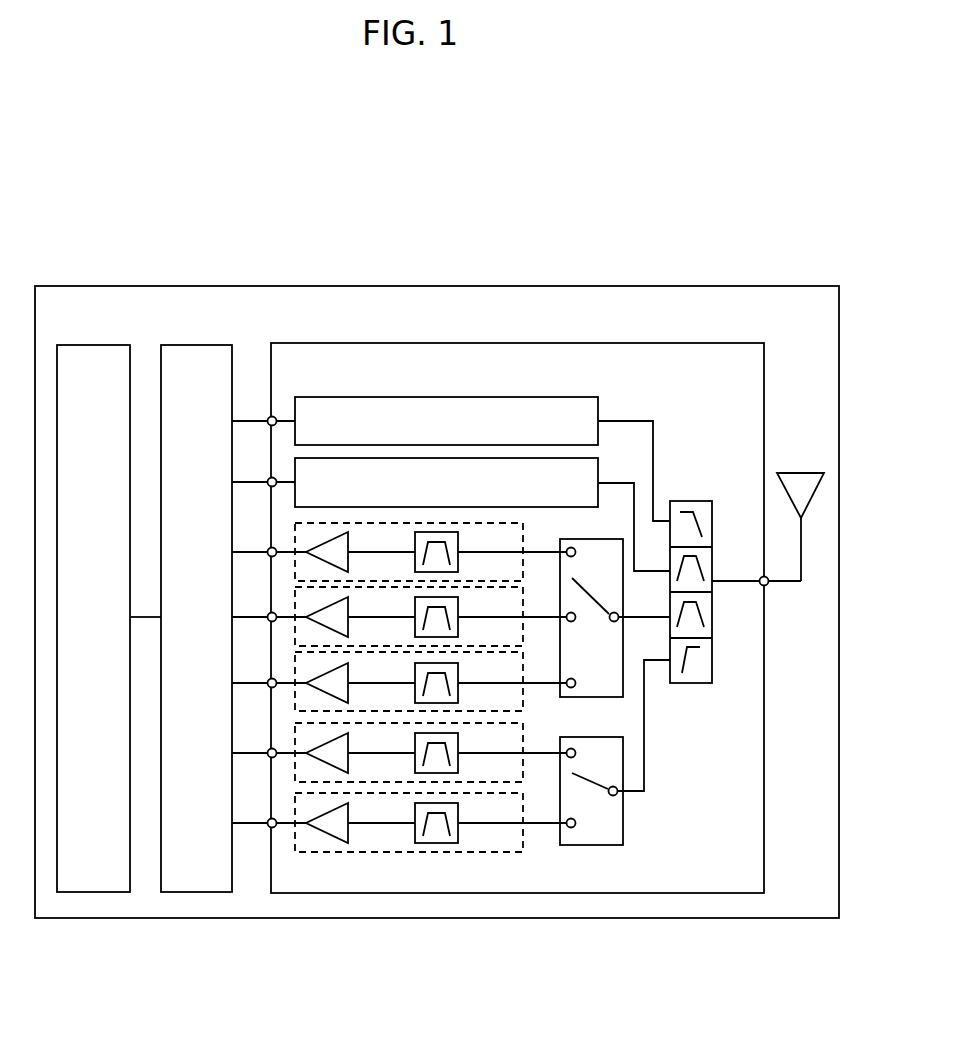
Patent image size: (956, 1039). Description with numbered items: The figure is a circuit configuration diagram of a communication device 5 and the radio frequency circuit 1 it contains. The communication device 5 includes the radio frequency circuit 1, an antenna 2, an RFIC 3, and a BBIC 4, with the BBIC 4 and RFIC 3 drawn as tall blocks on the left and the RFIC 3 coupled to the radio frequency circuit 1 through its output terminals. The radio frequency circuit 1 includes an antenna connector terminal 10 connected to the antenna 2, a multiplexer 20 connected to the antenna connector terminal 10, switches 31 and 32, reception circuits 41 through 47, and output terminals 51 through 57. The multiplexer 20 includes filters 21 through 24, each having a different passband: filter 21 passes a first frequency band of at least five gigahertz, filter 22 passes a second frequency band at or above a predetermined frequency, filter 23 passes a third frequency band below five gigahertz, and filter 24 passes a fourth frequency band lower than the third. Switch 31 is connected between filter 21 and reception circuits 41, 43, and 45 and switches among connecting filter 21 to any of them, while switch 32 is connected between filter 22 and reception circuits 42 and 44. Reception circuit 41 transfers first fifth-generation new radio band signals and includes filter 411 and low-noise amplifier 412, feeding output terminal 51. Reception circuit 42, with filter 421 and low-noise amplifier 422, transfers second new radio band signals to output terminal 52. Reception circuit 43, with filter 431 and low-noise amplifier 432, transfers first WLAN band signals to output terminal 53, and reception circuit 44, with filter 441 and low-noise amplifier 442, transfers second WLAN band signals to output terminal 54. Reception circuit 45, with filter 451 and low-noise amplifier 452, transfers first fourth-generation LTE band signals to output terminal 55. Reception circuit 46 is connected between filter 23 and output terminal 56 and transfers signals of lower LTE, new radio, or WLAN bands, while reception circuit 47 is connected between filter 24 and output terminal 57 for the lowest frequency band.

The radio frequency circuit 1 is at (339, 343).
The antenna 2 is at (797, 471).
The RFIC 3 is at (197, 345).
The BBIC 4 is at (84, 345).
The communication device 5 is at (782, 286).
The antenna connector terminal 10 is at (767, 586).
The multiplexer 20 is at (715, 571).
The filter 21 is at (713, 612).
The filter 22 is at (713, 655).
The filter 23 is at (713, 565).
The filter 24 is at (713, 520).
The switch 31 is at (592, 539).
The switch 32 is at (592, 845).
The reception circuit 41 is at (431, 544).
The reception circuit 42 is at (431, 744).
The reception circuit 43 is at (431, 609).
The reception circuit 44 is at (431, 813).
The reception circuit 45 is at (431, 674).
The reception circuit 46 is at (598, 468).
The reception circuit 47 is at (598, 403).
The filter 411 is at (460, 551).
The low-noise amplifier 412 is at (351, 551).
The filter 421 is at (460, 752).
The low-noise amplifier 422 is at (351, 752).
The filter 431 is at (460, 616).
The low-noise amplifier 432 is at (351, 616).
The filter 441 is at (460, 822).
The low-noise amplifier 442 is at (351, 822).
The filter 451 is at (460, 682).
The low-noise amplifier 452 is at (351, 682).
The output terminal 51 is at (268, 549).
The output terminal 52 is at (268, 750).
The output terminal 53 is at (268, 614).
The output terminal 54 is at (268, 820).
The output terminal 55 is at (268, 680).
The output terminal 56 is at (268, 479).
The output terminal 57 is at (268, 418).